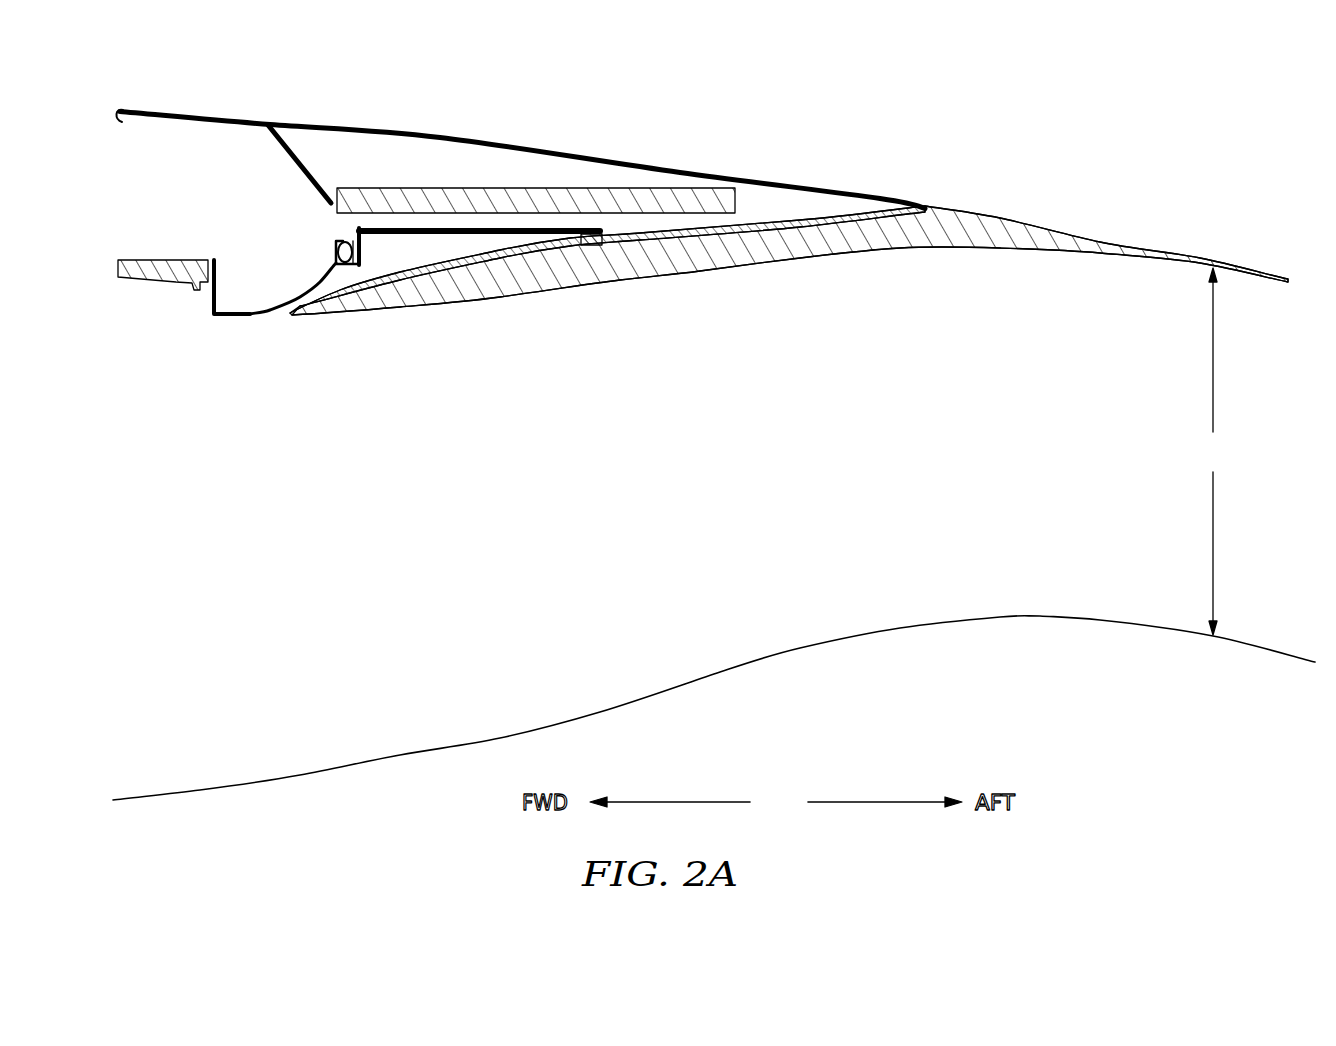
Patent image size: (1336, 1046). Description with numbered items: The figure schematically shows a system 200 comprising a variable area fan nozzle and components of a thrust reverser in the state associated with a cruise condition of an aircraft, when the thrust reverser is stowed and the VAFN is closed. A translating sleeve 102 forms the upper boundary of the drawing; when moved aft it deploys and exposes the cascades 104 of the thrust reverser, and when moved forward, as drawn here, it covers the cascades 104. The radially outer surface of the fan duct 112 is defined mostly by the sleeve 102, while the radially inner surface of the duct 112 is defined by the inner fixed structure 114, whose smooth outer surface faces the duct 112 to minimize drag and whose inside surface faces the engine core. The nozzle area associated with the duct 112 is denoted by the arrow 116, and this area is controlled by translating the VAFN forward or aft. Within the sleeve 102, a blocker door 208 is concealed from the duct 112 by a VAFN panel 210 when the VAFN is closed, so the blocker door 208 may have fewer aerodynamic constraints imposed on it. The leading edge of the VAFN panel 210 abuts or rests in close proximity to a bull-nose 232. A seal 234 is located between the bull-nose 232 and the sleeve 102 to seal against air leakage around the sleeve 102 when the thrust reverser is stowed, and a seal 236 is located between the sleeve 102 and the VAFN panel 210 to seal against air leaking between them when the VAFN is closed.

The sleeve 102 is at (795, 180).
The cascades 104 is at (472, 192).
The fan duct 112 is at (600, 480).
The inner fixed structure 114 is at (817, 649).
The nozzle area 116 is at (1212, 451).
The system 200 is at (702, 249).
The blocker door 208 is at (397, 280).
The VAFN panel 210 is at (910, 231).
The bull-nose 232 is at (267, 313).
The seal 234 is at (338, 258).
The seal 236 is at (652, 243).